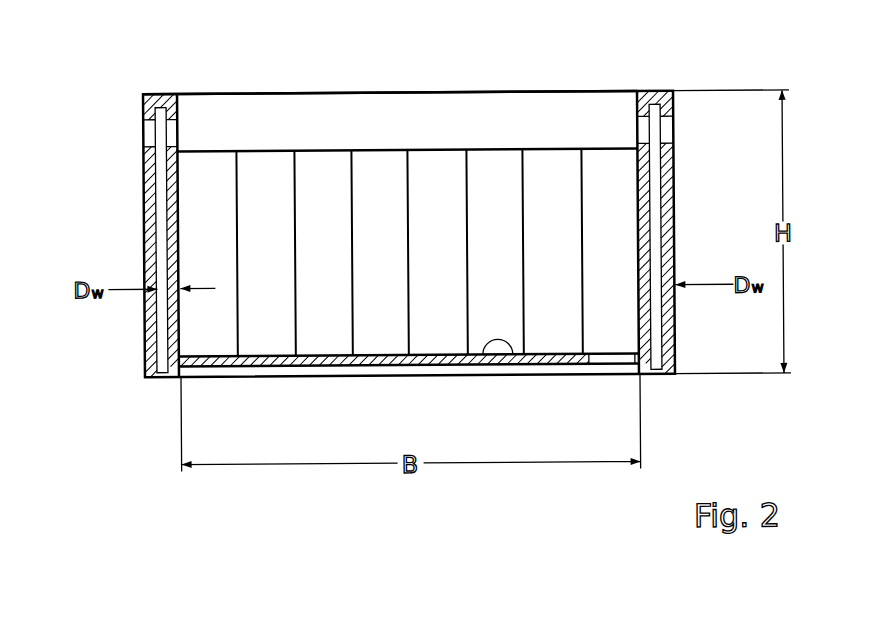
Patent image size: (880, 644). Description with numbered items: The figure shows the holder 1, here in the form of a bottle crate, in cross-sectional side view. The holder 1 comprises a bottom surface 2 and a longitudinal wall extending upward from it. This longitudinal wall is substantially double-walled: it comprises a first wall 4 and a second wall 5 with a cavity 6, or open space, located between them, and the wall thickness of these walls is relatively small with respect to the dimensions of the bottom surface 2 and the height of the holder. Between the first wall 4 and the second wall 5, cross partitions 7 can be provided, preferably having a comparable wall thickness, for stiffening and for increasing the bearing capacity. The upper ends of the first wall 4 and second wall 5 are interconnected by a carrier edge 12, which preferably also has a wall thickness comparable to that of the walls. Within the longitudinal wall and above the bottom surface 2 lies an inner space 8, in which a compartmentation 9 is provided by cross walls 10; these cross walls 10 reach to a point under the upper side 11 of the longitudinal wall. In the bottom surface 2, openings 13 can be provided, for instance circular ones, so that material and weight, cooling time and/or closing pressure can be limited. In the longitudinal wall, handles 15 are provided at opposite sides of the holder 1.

The holder 1 is at (92, 146).
The bottom surface 2 is at (508, 364).
The first wall 4 is at (172, 174).
The second wall 5 is at (150, 208).
The cavity 6 is at (162, 245).
The cross partitions 7 is at (655, 188).
The inner space 8 is at (382, 112).
The compartmentation 9 is at (324, 132).
The cross walls 10 is at (295, 150).
The upper side 11 is at (177, 78).
The carrier edge 12 is at (151, 92).
The openings 13 is at (610, 362).
The handles 15 is at (677, 132).